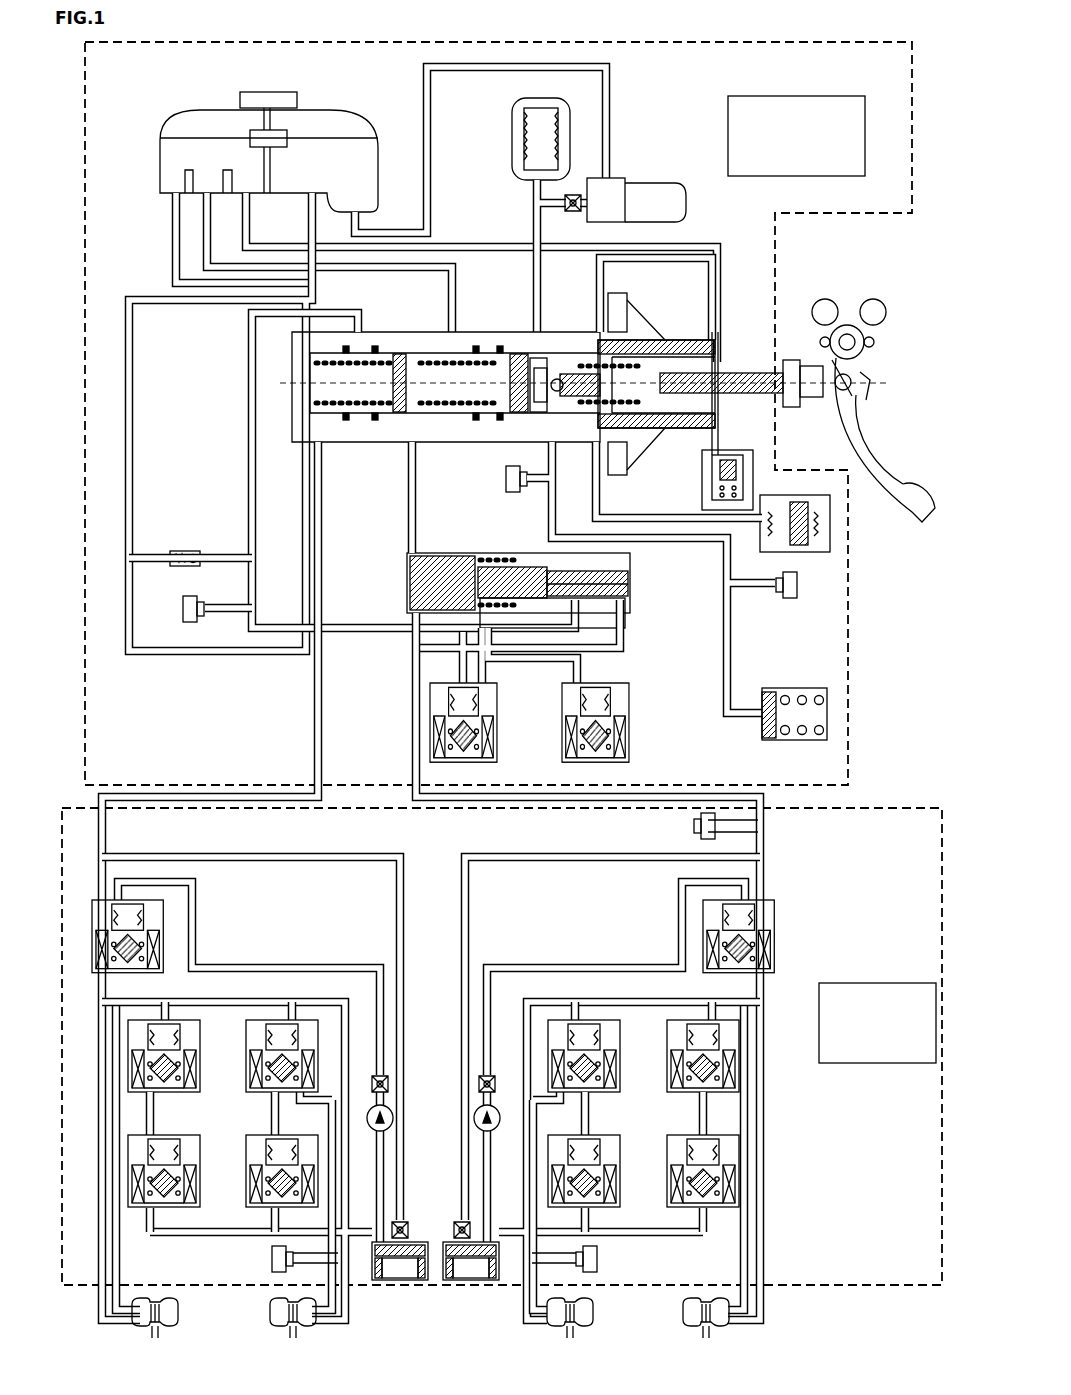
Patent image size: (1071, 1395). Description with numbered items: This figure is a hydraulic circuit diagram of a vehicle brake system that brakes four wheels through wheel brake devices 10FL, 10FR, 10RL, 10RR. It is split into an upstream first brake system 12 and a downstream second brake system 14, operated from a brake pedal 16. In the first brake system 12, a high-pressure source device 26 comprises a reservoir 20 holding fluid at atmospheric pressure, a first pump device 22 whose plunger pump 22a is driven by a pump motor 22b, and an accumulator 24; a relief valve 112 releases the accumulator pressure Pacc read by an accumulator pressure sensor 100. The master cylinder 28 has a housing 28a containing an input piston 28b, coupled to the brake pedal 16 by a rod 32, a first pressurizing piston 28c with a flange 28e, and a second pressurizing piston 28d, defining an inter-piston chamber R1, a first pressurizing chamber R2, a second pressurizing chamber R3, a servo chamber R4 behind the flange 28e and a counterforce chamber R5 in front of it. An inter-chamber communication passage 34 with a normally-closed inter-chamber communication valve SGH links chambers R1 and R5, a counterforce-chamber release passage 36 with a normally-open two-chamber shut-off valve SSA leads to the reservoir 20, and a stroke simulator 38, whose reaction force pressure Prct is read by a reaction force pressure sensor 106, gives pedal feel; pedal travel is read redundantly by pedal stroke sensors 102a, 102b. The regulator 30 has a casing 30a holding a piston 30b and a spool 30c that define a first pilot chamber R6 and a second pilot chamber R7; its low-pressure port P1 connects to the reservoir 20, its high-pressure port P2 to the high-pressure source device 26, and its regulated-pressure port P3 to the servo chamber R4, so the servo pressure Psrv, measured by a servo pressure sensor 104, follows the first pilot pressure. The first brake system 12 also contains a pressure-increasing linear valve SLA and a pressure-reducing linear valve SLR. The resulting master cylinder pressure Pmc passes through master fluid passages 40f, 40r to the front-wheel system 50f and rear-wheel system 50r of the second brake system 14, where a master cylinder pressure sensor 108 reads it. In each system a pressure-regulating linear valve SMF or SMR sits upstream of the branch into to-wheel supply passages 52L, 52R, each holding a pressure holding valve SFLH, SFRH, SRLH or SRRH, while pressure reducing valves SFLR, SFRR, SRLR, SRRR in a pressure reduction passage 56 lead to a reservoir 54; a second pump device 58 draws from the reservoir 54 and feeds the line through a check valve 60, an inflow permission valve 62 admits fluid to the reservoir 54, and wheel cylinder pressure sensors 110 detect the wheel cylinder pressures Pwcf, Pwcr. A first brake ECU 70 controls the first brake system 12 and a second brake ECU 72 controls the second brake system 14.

The first brake system 12 is at (788, 42).
The second brake system 14 is at (868, 808).
The brake pedal 16 is at (864, 442).
The reservoir 20 is at (325, 112).
The first pump device 22 is at (645, 160).
The pump 22a is at (612, 180).
The pump motor 22b is at (656, 184).
The accumulator 24 is at (512, 140).
The high-pressure source device 26 is at (625, 68).
The master cylinder 28 is at (571, 440).
The housing 28a is at (470, 335).
The input piston 28b is at (664, 346).
The first pressurizing piston 28c is at (530, 352).
The second pressurizing piston 28d is at (396, 352).
The flange 28e is at (548, 357).
The regulator 30 is at (508, 579).
The casing 30a is at (482, 565).
The piston 30b is at (412, 556).
The spool 30c is at (566, 570).
The rod 32 is at (732, 368).
The inter-chamber communication passage 34 is at (668, 523).
The counterforce-chamber release passage 36 is at (720, 432).
The stroke simulator 38 is at (790, 690).
The master fluid passage 40r is at (190, 797).
The master fluid passage 40f is at (736, 797).
The rear-wheel system 50r is at (413, 1107).
The front-wheel system 50f is at (812, 1124).
The to-wheel supply passage 52R is at (100, 1020).
The to-wheel supply passage 52L is at (345, 1020).
The reservoir 54 is at (402, 1272).
The pressure reduction passage 56 is at (222, 1218).
The second pump device 58 is at (393, 1116).
The check valve 60 is at (390, 1076).
The inflow permission valve 62 is at (410, 1222).
The first brake electronic control unit 70 is at (820, 98).
The second brake electronic control unit 72 is at (873, 990).
The accumulator pressure sensor 100 is at (183, 610).
The pedal stroke sensor 102a is at (825, 299).
The pedal stroke sensor 102b is at (873, 299).
The servo pressure sensor 104 is at (508, 490).
The reaction force pressure sensor 106 is at (788, 584).
The master cylinder pressure sensor 108 is at (688, 832).
The wheel cylinder pressure sensor 110 is at (275, 1270).
The relief valve 112 is at (182, 551).
The wheel brake device 10RR is at (185, 1316).
The wheel brake device 10RL is at (270, 1316).
The wheel brake device 10FR is at (596, 1316).
The wheel brake device 10FL is at (683, 1316).
The inter-piston chamber R1 is at (630, 410).
The first pressurizing chamber R2 is at (428, 408).
The second pressurizing chamber R3 is at (332, 410).
The servo chamber R4 is at (560, 415).
The counterforce chamber R5 is at (530, 420).
The first pilot chamber R6 is at (500, 608).
The second pilot chamber R7 is at (407, 580).
The low-pressure port P1 is at (628, 600).
The high-pressure port P2 is at (580, 604).
The regulated-pressure port P3 is at (508, 557).
The two-chamber shut-off valve SSA is at (702, 470).
The inter-chamber communication valve SGH is at (790, 552).
The pressure-increasing linear valve SLA is at (495, 758).
The pressure-reducing linear valve SLR is at (625, 758).
The pressure-regulating linear valve SMR is at (160, 975).
The pressure-regulating linear valve SMF is at (715, 975).
The pressure holding valve SRRH is at (192, 1092).
The pressure holding valve SRLH is at (248, 1092).
The pressure reducing valve SRRR is at (192, 1208).
The pressure reducing valve SRLR is at (248, 1208).
The pressure holding valve SFRH is at (614, 1092).
The pressure holding valve SFLH is at (670, 1092).
The pressure reducing valve SFRR is at (614, 1208).
The pressure reducing valve SFLR is at (670, 1208).
The accumulator pressure Pacc is at (185, 632).
The servo pressure Psrv is at (514, 507).
The reaction force pressure Prct is at (782, 609).
The master cylinder pressure Pmc is at (666, 823).
The wheel cylinder pressure Pwcr is at (242, 1257).
The wheel cylinder pressure Pwcf is at (618, 1257).